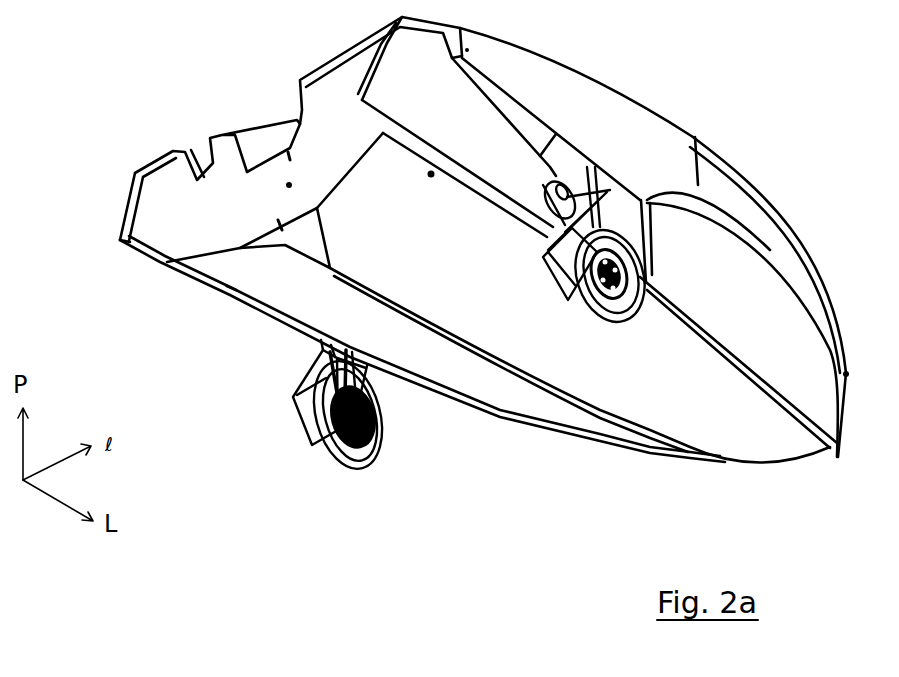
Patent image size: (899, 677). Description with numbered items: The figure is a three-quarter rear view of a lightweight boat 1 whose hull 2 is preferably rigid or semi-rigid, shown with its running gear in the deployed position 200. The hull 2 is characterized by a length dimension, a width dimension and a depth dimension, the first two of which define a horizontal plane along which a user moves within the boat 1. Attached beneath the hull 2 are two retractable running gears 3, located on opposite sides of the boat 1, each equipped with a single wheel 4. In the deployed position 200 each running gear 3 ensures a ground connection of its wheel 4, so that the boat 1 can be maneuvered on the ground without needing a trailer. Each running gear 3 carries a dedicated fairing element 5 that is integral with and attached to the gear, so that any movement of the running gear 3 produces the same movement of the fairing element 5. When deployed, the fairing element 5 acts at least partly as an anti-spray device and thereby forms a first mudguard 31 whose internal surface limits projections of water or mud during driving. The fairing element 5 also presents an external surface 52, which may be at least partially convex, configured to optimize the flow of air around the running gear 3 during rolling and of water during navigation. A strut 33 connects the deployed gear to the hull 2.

The boat 1 is at (154, 50).
The hull 2 is at (678, 125).
The running gear 3 is at (270, 399).
The wheel 4 is at (346, 455).
The fairing element 5 is at (308, 396).
The first mudguard 31 is at (570, 278).
The suspension arm 33 is at (325, 382).
The external surface 52 is at (300, 412).
The deployed position 200 is at (793, 521).